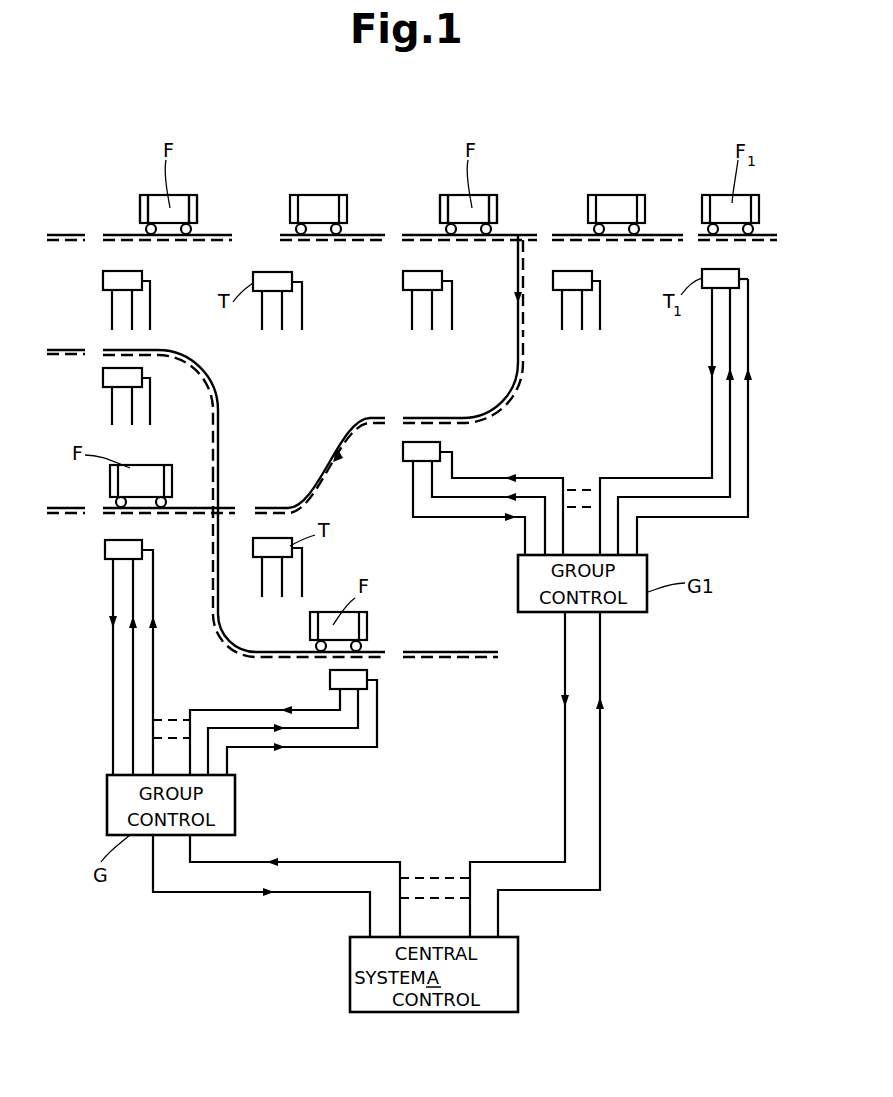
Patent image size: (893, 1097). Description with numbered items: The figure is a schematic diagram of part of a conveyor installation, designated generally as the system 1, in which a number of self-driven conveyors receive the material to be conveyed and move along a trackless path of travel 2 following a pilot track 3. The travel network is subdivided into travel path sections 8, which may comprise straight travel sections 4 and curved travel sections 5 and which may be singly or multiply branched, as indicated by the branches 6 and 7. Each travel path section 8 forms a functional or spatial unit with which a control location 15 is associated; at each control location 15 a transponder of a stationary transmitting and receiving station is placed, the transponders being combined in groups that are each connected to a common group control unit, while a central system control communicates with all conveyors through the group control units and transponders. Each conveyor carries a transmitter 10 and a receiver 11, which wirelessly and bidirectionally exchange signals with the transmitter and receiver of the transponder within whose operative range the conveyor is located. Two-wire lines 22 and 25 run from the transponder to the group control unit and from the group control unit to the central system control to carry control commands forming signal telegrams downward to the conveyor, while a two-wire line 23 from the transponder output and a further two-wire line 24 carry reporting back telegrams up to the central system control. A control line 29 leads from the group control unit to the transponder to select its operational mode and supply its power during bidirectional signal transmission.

The transport system 1 is at (668, 791).
The path of travel 2 is at (770, 232).
The pilot track 3 is at (776, 242).
The straight travel section 4 is at (362, 240).
The curved travel section 5 is at (345, 432).
The branch 6 is at (515, 238).
The branch 7 is at (221, 510).
The travel path section 8 is at (205, 246).
The transmitter 10 is at (143, 216).
The receiver 11 is at (196, 214).
The control location 15 is at (91, 270).
The two-wire line 22 is at (313, 730).
The two-wire line 23 is at (243, 710).
The two-wire line 24 is at (565, 730).
The two-wire line 25 is at (602, 681).
The control line 29 is at (366, 748).